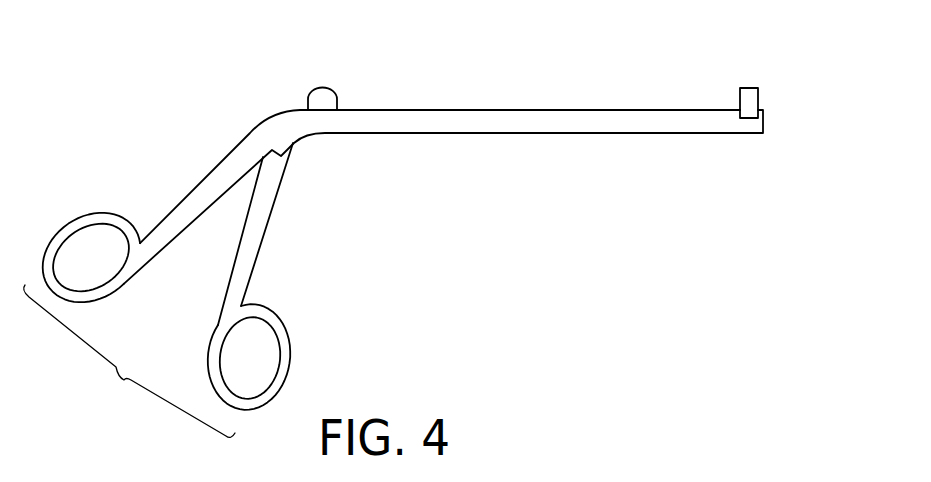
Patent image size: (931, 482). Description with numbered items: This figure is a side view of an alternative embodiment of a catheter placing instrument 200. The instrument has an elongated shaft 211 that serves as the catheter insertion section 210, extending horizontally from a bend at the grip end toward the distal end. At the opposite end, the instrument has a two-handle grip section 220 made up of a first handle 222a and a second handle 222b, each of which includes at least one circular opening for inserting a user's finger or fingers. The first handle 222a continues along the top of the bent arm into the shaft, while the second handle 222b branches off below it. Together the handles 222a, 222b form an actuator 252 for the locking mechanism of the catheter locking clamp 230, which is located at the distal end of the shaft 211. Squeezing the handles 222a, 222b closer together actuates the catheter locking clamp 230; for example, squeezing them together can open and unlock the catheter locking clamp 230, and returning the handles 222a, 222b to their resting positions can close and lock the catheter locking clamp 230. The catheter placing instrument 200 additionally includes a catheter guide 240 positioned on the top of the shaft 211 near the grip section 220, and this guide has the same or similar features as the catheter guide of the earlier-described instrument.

The catheter placing instrument 200 is at (235, 108).
The catheter insertion section 210 is at (545, 152).
The elongated shaft 211 is at (527, 113).
The two-handle grip section 220 is at (297, 275).
The first handle 222a is at (153, 258).
The second handle 222b is at (220, 318).
The catheter locking clamp 230 is at (755, 80).
The catheter guide 240 is at (325, 88).
The actuator 252 is at (129, 361).